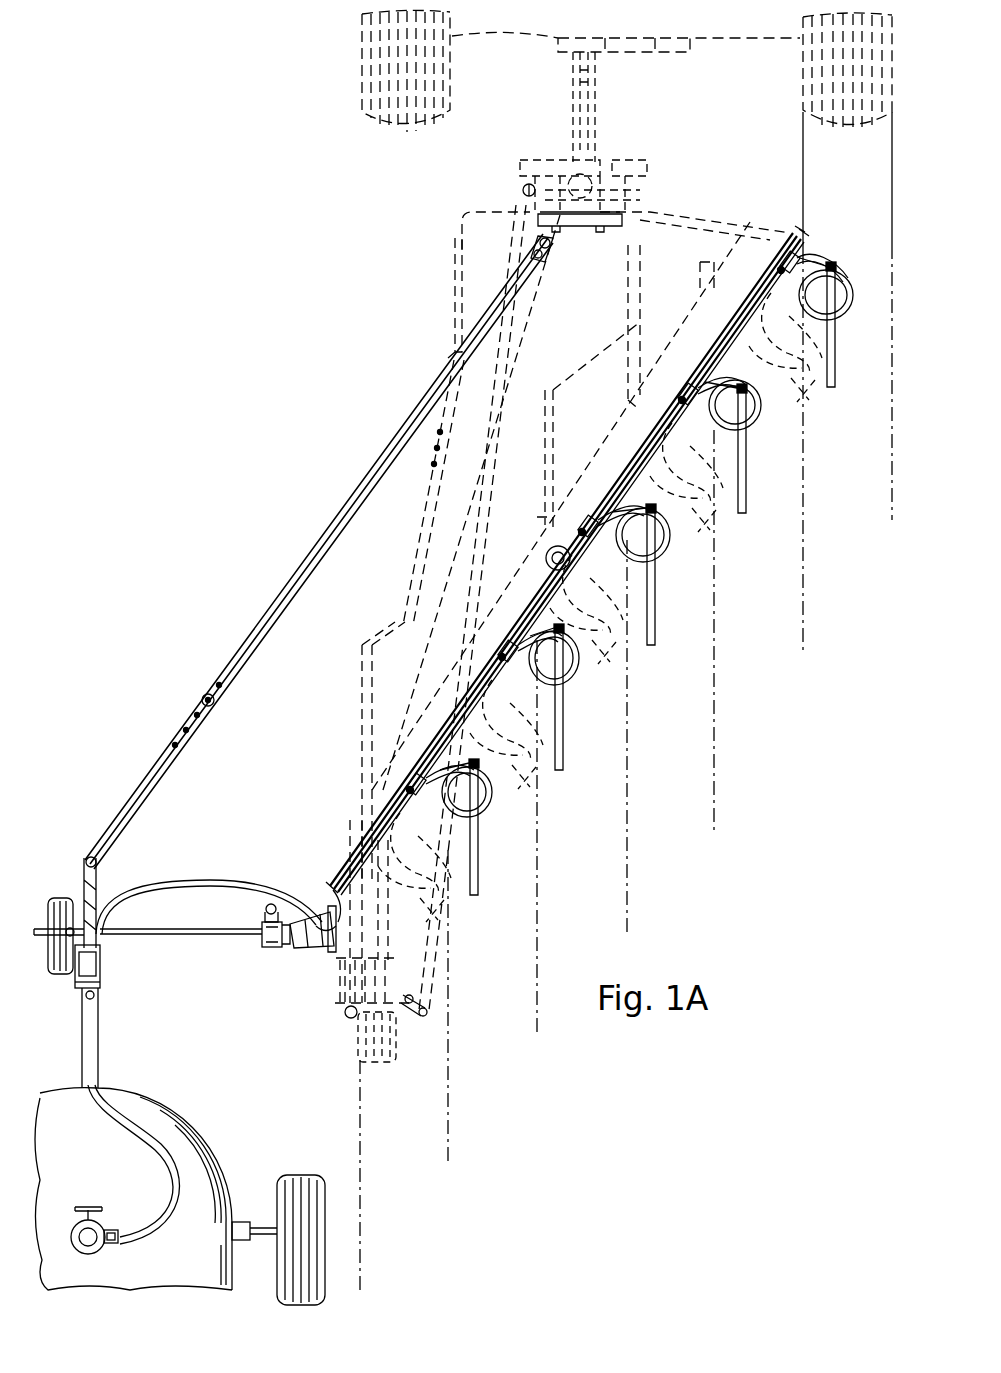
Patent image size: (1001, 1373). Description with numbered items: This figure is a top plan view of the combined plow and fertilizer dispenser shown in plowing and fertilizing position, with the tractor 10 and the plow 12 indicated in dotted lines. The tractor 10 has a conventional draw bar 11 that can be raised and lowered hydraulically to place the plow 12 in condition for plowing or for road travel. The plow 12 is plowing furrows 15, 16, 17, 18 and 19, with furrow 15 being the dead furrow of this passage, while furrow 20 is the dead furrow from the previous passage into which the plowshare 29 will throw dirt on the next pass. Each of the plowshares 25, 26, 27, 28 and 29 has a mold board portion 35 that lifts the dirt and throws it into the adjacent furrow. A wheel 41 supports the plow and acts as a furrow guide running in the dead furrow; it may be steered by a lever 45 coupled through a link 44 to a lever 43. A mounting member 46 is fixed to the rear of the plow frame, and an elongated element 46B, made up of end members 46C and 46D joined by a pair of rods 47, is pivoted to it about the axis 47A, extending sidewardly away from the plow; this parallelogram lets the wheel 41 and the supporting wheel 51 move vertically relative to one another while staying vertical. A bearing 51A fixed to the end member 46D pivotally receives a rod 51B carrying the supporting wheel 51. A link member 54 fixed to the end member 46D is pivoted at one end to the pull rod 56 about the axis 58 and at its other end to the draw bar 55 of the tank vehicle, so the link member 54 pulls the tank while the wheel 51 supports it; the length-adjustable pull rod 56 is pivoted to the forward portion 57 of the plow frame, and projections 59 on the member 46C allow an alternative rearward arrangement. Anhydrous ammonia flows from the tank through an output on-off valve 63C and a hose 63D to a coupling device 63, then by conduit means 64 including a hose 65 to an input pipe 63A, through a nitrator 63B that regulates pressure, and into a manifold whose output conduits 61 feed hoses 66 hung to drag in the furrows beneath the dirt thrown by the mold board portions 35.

The tractor 10 is at (355, 121).
The draw bar 11 is at (612, 116).
The plow 12 is at (356, 703).
The furrow 15 is at (418, 1158).
The furrow 16 is at (507, 1033).
The furrow 17 is at (598, 876).
The furrow 18 is at (686, 782).
The furrow 19 is at (777, 619).
The furrow 20 is at (863, 543).
The plowshare 25 is at (440, 918).
The plowshare 26 is at (532, 786).
The plowshare 27 is at (612, 657).
The plowshare 28 is at (712, 534).
The plowshare 29 is at (806, 404).
The mold board portion 35 is at (810, 425).
The wheel 41 is at (396, 1060).
The lever 43 is at (553, 160).
The link 44 is at (520, 356).
The lever 45 is at (418, 1006).
The mounting member 46 is at (322, 950).
The elongated element 46B is at (215, 950).
The end member 46C is at (268, 950).
The end member 46D is at (98, 942).
The rods 47 is at (155, 928).
The axis 47A is at (296, 906).
The supporting wheel 51 is at (62, 896).
The bearing 51A is at (98, 892).
The rod 51B is at (48, 940).
The link member 54 is at (110, 860).
The draw bar 55 is at (99, 1044).
The pull rod 56 is at (258, 648).
The forward portion 57 is at (645, 184).
The axis 58 is at (86, 862).
The projections 59 is at (263, 912).
The output conduits 61 is at (629, 534).
The coupling device 63 is at (100, 978).
The input pipe 63A is at (338, 862).
The nitrator 63B is at (545, 552).
The output on-off valve 63C is at (88, 1206).
The hose 63D is at (155, 1225).
The conduit means 64 is at (258, 874).
The hose 65 is at (213, 880).
The hoses 66 is at (656, 623).